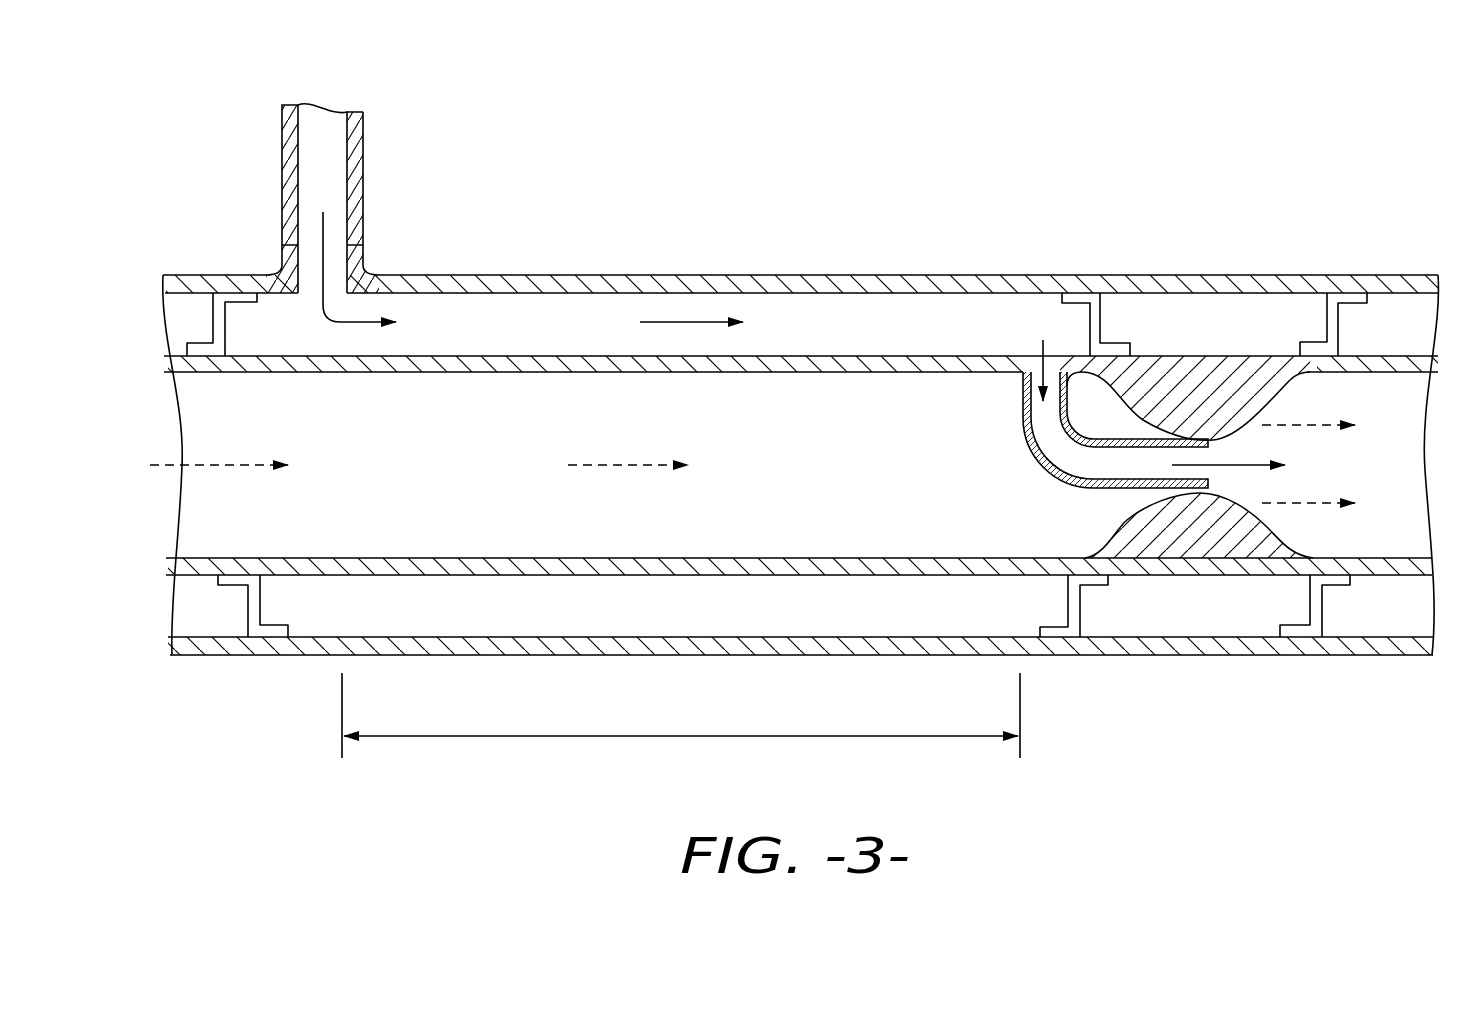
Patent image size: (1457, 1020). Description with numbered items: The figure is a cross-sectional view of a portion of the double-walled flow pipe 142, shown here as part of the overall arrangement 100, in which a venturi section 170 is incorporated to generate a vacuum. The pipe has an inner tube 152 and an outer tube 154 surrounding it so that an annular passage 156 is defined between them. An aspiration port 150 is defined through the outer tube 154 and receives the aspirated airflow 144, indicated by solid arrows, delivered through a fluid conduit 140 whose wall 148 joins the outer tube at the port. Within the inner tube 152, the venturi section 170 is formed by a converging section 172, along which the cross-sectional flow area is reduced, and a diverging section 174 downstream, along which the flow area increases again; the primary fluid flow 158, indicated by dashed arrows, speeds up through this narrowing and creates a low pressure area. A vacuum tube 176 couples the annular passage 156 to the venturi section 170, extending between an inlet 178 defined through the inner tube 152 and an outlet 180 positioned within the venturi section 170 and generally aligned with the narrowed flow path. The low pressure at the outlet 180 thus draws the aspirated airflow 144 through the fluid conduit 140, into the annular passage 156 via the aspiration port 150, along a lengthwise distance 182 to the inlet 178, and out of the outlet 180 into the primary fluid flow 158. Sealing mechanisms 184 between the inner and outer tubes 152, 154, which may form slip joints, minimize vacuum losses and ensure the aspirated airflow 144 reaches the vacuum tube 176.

The fluid mixing system 100 is at (512, 121).
The fluid conduit 140 is at (288, 178).
The double-walled flow pipe 142 is at (1120, 387).
The aspirated airflow 144 is at (323, 258).
The conduit wall 148 is at (288, 183).
The aspiration port 150 is at (280, 258).
The inner tube 152 is at (425, 366).
The outer tube 154 is at (808, 277).
The annular passage 156 is at (494, 316).
The primary fluid flow 158 is at (222, 470).
The venturi section 170 is at (1189, 390).
The converging section 172 is at (1137, 548).
The diverging section 174 is at (1243, 543).
The vacuum tube 176 is at (1022, 447).
The inlet 178 is at (1043, 340).
The outlet 180 is at (1222, 443).
The lengthwise distance 182 is at (590, 737).
The sealing mechanisms 184 is at (213, 325).